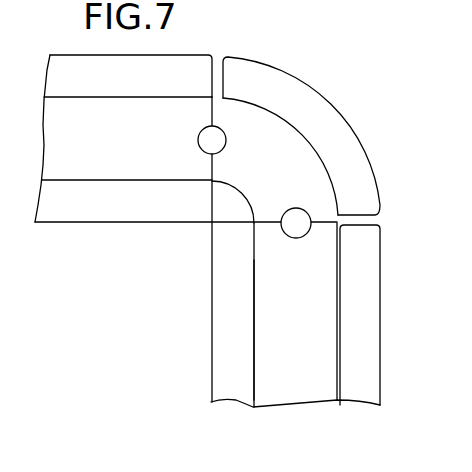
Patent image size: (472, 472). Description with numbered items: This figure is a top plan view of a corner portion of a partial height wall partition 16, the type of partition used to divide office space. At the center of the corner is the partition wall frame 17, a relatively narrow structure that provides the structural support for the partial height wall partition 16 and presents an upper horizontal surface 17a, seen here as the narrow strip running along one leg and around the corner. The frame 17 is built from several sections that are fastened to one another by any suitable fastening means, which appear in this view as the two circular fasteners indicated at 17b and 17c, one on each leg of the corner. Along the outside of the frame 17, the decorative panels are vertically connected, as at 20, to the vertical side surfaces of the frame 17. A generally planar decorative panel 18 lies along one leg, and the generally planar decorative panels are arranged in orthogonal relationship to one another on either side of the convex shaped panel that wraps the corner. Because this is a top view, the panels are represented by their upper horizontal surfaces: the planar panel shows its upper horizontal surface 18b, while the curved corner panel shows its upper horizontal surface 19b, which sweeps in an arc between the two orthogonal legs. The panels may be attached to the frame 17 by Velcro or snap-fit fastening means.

The partial height wall partition 16 is at (242, 224).
The partition wall frame 17 is at (207, 231).
The upper horizontal surface 17a is at (272, 365).
The fastening means 17b is at (198, 139).
The fastening means 17c is at (291, 236).
The generally planar decorative panel 18 is at (301, 223).
The upper horizontal surface 18b is at (342, 287).
The upper horizontal surface 19b is at (338, 140).
The vertical connection 20 is at (337, 357).